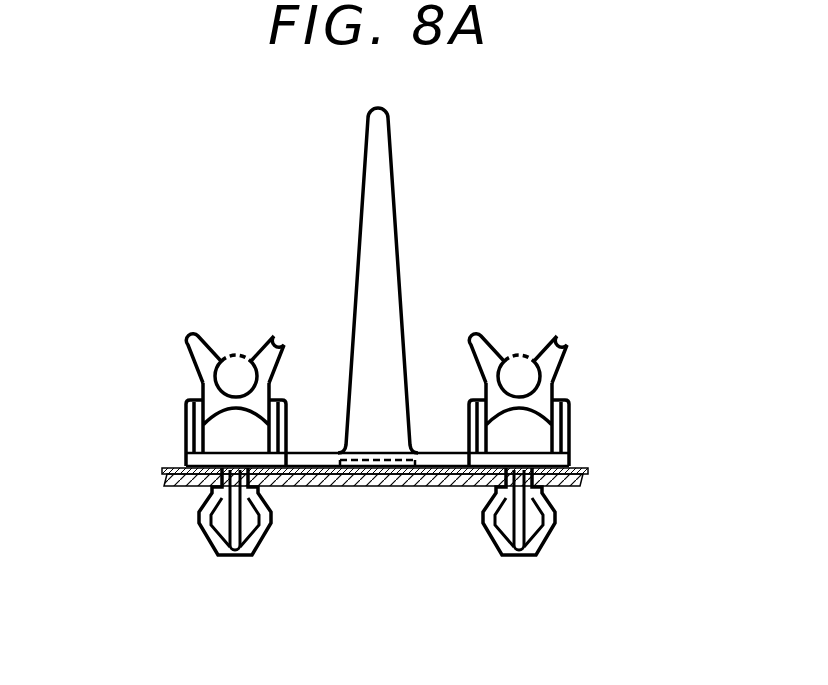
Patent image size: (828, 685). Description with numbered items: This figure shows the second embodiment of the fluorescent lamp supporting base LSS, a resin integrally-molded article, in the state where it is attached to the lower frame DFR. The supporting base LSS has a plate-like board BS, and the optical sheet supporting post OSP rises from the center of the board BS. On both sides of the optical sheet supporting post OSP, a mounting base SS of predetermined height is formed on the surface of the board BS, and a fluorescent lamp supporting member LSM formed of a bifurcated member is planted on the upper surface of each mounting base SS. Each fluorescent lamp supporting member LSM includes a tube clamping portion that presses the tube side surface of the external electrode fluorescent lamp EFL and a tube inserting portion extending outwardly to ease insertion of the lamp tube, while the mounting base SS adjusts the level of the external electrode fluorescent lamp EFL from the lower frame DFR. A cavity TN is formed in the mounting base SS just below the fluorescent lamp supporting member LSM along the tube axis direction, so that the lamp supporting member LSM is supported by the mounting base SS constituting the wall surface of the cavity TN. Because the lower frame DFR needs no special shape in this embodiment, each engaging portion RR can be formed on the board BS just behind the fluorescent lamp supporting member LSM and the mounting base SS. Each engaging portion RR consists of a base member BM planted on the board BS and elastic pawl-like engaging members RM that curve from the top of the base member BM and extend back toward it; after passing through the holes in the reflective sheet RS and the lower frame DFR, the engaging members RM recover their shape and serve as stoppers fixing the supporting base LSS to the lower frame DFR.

The fluorescent lamp supporting base LSS is at (318, 238).
The optical sheet supporting post OSP is at (390, 192).
The external electrode fluorescent lamp EFL is at (232, 355).
The mounting base SS is at (192, 407).
The cavity TN is at (210, 442).
The reflective sheet RS is at (158, 470).
The board BS is at (315, 460).
The fluorescent lamp supporting member LSM is at (547, 382).
The lower frame DFR is at (333, 477).
The engaging member RM is at (207, 535).
The engaging portion RR is at (212, 560).
The base member BM is at (238, 520).